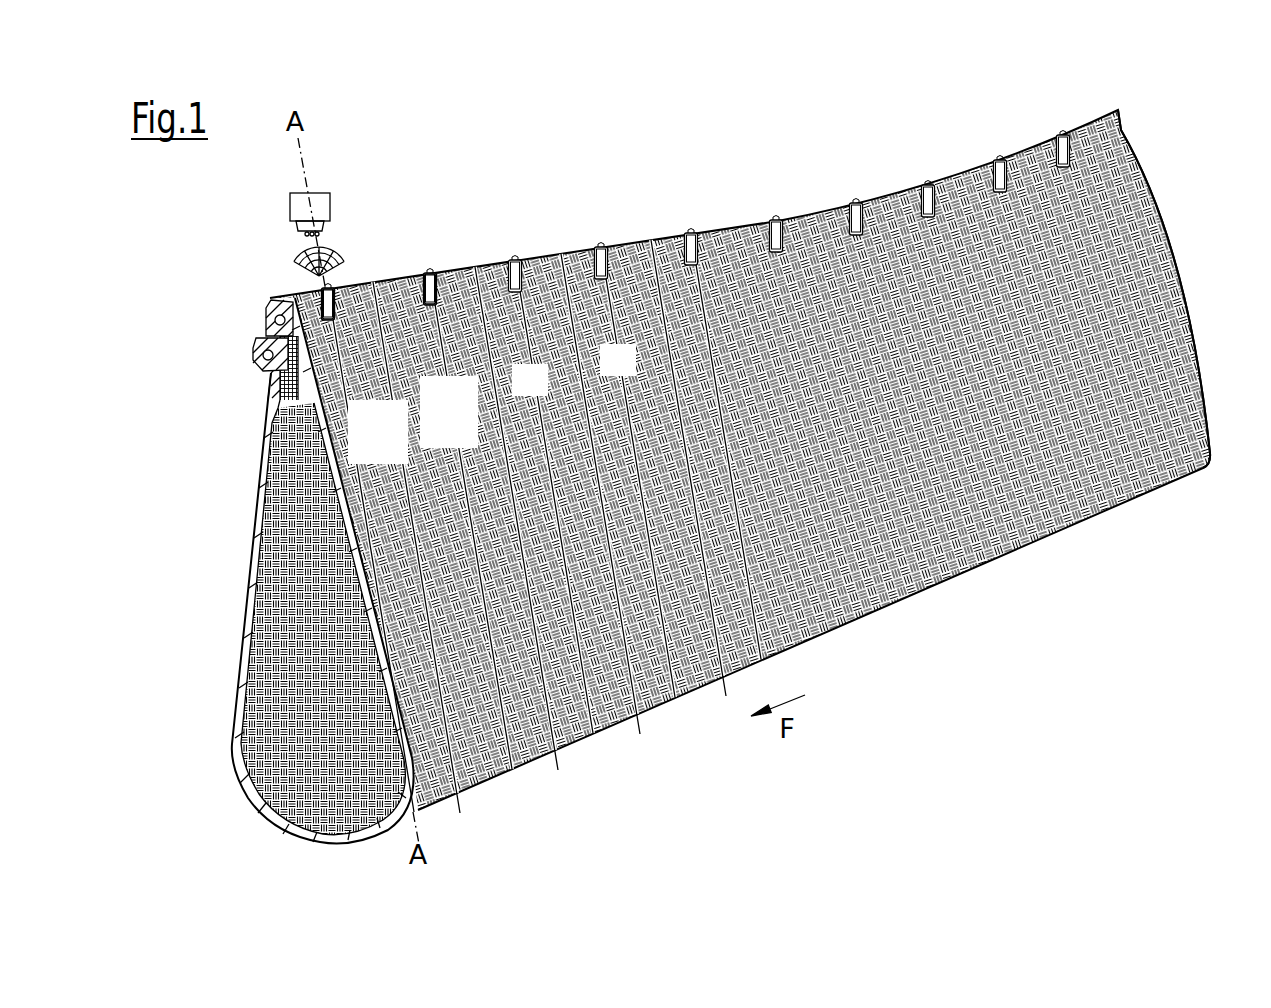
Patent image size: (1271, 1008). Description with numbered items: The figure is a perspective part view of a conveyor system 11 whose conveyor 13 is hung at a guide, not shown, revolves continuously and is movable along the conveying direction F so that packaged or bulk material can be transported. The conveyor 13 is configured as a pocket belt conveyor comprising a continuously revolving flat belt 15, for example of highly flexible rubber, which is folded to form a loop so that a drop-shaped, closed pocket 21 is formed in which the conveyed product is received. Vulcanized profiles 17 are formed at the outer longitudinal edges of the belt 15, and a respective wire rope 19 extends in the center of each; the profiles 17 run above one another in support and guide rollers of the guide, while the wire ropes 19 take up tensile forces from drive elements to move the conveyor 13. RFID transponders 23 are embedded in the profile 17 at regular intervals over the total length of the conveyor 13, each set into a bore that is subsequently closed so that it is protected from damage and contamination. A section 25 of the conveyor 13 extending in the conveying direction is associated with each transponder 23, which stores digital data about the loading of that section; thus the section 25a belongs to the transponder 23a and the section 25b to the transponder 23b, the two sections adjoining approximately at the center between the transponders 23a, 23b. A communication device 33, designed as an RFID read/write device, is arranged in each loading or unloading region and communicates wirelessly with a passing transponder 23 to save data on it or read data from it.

The conveyor system 11 is at (1096, 666).
The conveyor 13 is at (1131, 538).
The flat belt 15 is at (913, 578).
The vulcanized profile 17 is at (258, 303).
The wire rope 19 is at (267, 297).
The pocket 21 is at (264, 789).
The RFID transponder 23 is at (506, 248).
The transponder 23a is at (318, 277).
The transponder 23b is at (422, 253).
The section 25 is at (544, 523).
The section 25a is at (354, 421).
The section 25b is at (424, 398).
The communication device 33 is at (282, 198).